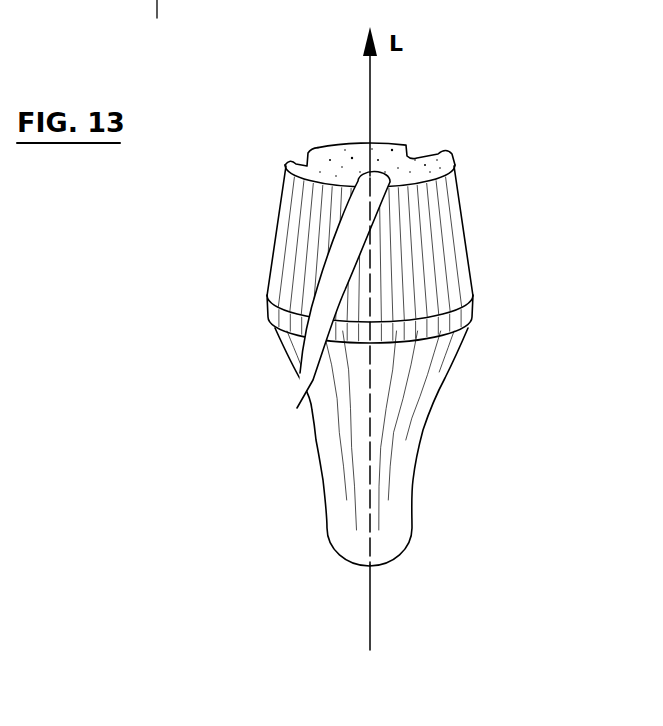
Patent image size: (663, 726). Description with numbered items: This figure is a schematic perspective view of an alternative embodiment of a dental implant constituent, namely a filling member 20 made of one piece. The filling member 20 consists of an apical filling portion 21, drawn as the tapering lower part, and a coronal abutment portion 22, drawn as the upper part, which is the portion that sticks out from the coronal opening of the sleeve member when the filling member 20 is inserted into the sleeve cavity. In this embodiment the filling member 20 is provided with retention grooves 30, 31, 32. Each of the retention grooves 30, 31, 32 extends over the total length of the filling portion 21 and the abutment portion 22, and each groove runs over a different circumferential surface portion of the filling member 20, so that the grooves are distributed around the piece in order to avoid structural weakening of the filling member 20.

The filling member 20 is at (317, 314).
The filling portion 21 is at (403, 413).
The abutment portion 22 is at (386, 202).
The retention groove 30 is at (297, 408).
The retention groove 31 is at (418, 156).
The retention groove 32 is at (302, 161).